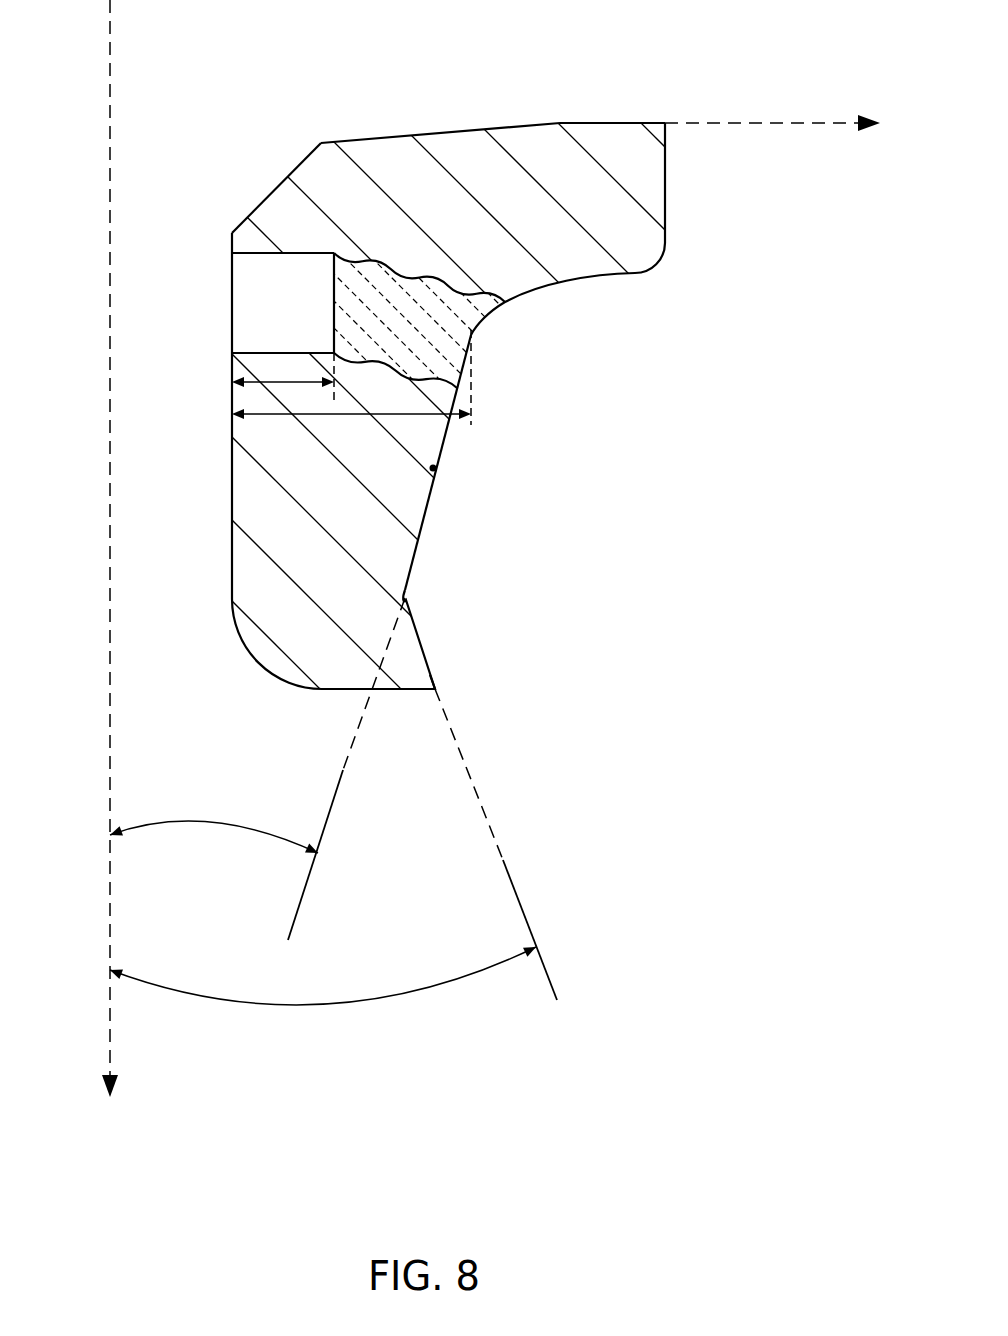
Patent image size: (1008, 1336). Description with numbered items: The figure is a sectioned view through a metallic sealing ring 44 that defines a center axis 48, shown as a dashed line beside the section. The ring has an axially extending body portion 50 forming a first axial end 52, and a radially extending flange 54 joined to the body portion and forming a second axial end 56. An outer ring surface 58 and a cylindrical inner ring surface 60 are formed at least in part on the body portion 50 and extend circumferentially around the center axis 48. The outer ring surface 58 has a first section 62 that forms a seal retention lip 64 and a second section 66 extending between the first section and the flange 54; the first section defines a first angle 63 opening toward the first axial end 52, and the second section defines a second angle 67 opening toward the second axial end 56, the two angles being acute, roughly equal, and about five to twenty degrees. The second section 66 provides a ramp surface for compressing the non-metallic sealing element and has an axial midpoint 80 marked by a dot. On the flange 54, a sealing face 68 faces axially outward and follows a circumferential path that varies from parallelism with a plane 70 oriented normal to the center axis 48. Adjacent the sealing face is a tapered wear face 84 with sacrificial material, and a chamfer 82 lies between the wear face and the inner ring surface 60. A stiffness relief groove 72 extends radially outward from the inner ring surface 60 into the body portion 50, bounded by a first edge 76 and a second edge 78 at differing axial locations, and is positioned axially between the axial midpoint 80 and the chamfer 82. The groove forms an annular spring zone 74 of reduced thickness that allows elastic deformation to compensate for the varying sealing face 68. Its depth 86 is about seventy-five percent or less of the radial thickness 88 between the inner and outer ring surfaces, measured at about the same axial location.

The metallic sealing ring 44 is at (216, 138).
The center axis 48 is at (110, 507).
The axially extending body portion 50 is at (243, 507).
The first axial end 52 is at (334, 700).
The radially extending flange 54 is at (587, 276).
The second axial end 56 is at (583, 108).
The outer ring surface 58 is at (427, 507).
The inner ring surface 60 is at (232, 462).
The first section 62 is at (419, 627).
The first angle 63 is at (257, 769).
The seal retention lip 64 is at (443, 669).
The second section 66 is at (452, 432).
The second angle 67 is at (333, 862).
The sealing face 68 is at (635, 122).
The plane 70 is at (770, 122).
The stiffness relief groove 72 is at (247, 340).
The annular spring zone 74 is at (418, 329).
The first edge 76 is at (232, 354).
The second edge 78 is at (232, 253).
The axial midpoint 80 is at (450, 464).
The chamfer 82 is at (298, 167).
The tapered wear face 84 is at (447, 131).
The depth 86 is at (283, 376).
The radial thickness 88 is at (351, 422).